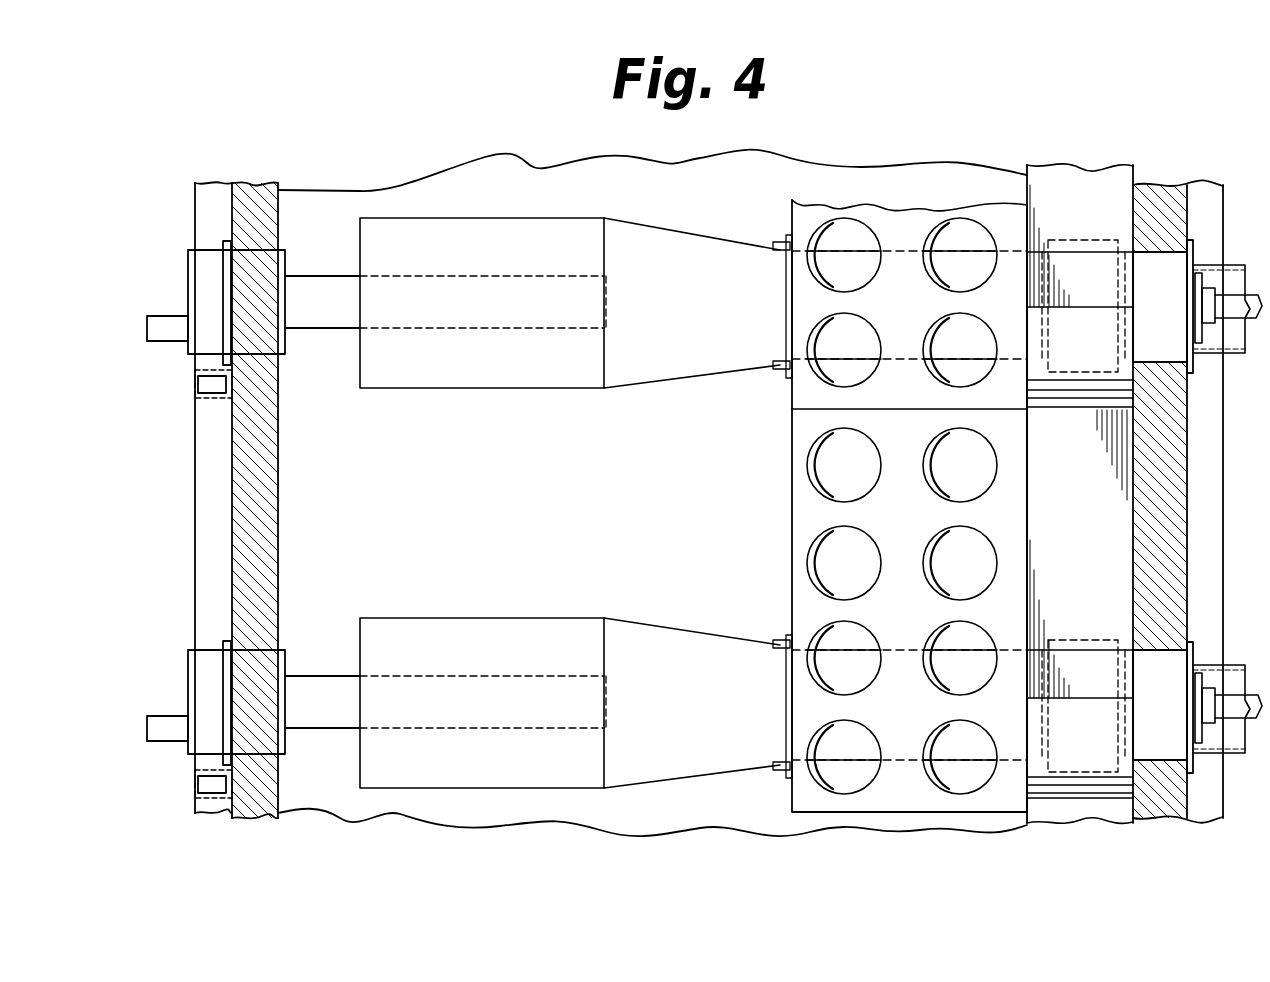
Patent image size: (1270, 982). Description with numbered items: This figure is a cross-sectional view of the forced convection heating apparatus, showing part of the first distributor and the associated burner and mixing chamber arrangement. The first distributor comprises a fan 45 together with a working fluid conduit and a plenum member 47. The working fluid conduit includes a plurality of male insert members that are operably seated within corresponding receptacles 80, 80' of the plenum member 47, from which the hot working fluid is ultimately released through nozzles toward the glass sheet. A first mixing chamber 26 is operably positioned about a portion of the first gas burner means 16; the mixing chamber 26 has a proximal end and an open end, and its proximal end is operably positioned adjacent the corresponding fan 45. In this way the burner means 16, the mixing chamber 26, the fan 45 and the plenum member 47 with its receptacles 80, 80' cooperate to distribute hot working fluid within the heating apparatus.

The first gas burner means 16 is at (330, 730).
The first mixing chamber 26 is at (473, 767).
The receptacle 80 is at (844, 558).
The receptacle 80' is at (952, 558).
The plenum member 47 is at (1000, 792).
The fan 45 is at (1100, 765).